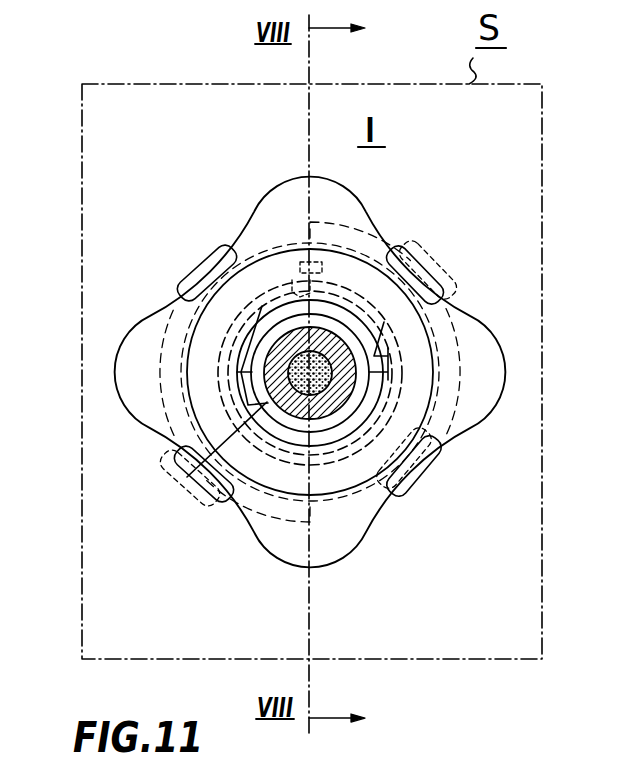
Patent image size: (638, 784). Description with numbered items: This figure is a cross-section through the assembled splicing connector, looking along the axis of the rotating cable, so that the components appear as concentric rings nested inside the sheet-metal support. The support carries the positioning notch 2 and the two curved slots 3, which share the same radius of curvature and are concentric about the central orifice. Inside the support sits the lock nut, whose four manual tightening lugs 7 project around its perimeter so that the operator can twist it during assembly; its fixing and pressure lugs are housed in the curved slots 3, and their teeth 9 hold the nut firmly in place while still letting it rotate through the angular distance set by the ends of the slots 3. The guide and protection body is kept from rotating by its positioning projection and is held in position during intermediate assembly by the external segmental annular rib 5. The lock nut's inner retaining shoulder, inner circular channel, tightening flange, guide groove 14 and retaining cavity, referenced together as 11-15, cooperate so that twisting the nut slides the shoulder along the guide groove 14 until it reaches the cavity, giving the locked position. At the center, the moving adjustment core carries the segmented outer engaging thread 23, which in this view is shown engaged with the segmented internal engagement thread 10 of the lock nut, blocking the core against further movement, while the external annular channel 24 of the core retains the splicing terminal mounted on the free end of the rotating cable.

The positioning notch 2 is at (310, 262).
The curved slots 3 is at (402, 244).
The external segmental annular rib 5 is at (247, 302).
The manual tightening lugs 7 is at (378, 222).
The teeth 9 is at (441, 277).
The segmented internal engagement thread 10 is at (325, 494).
The inner retaining shoulder to retaining cavity 11-15 is at (238, 298).
The guide groove 14 is at (386, 358).
The segmented outer engaging thread 23 is at (426, 400).
The external annular channel 24 is at (187, 477).